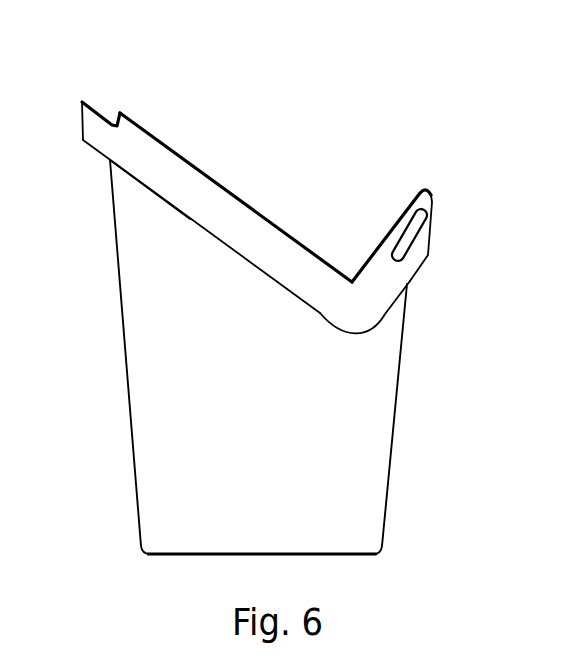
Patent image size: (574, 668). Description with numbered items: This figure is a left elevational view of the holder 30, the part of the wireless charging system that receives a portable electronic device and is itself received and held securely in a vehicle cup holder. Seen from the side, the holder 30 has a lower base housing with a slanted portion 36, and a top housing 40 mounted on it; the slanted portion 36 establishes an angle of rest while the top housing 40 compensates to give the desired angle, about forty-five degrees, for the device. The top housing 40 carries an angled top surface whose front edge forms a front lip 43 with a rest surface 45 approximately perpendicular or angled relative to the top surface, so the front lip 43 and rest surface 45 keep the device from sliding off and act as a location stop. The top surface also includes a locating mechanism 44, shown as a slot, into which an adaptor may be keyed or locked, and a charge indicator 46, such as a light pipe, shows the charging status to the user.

The holder 30 is at (395, 432).
The slanted portion 36 is at (190, 220).
The top housing 40 is at (247, 203).
The front lip 43 is at (370, 302).
The locating mechanism 44 is at (100, 113).
The rest surface 45 is at (397, 222).
The charge indicator 46 is at (423, 218).